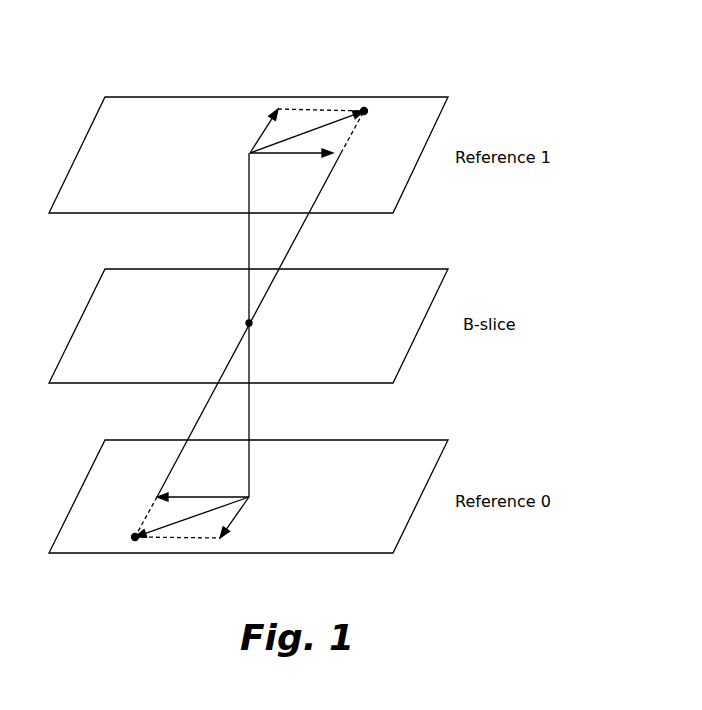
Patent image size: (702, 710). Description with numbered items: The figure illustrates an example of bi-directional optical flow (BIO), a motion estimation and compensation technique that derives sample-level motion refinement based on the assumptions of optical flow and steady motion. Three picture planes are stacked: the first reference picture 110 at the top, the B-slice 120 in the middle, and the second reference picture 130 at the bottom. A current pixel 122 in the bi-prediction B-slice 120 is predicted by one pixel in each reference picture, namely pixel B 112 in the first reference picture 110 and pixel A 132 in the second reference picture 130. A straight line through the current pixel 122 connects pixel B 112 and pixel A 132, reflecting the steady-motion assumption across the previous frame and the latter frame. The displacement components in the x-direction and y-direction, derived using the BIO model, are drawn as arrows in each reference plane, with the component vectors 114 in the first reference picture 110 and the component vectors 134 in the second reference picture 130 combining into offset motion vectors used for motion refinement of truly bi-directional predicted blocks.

The reference picture 1 110 is at (388, 97).
The pixel B 112 is at (364, 111).
The motion vector components to Reference 1 114 is at (308, 118).
The B-slice 120 is at (382, 269).
The current pixel 122 is at (249, 323).
The reference picture 0 130 is at (382, 440).
The pixel A 132 is at (135, 540).
The motion vector to Reference 0 134 is at (192, 523).